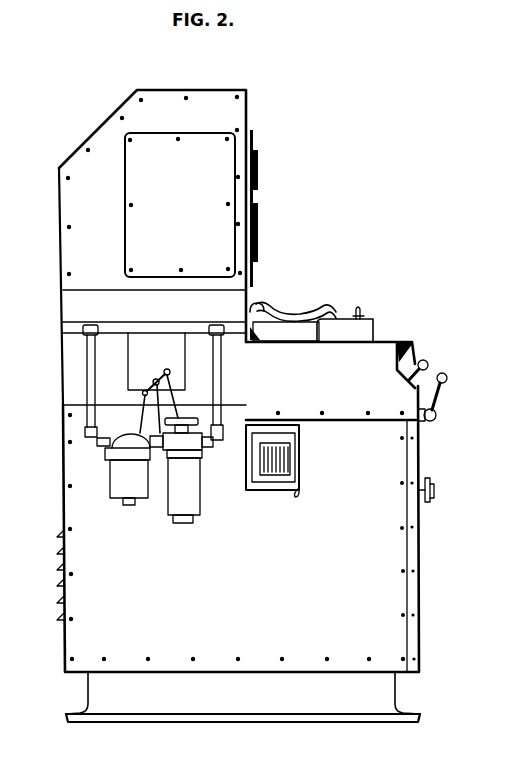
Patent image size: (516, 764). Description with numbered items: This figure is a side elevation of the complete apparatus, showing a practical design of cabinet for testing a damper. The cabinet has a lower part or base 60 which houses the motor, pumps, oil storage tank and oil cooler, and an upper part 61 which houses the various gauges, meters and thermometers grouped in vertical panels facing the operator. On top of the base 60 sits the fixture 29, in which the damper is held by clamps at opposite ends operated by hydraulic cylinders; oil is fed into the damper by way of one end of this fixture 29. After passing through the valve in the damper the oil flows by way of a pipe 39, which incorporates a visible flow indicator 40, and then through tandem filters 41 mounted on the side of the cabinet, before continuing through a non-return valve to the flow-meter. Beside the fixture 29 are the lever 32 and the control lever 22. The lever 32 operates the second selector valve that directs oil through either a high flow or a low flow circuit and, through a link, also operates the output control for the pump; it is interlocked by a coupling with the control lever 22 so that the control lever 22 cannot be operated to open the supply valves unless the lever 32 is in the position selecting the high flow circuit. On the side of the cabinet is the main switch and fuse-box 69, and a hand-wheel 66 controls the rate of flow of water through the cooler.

The upper part of the cabinet 61 is at (193, 107).
The base of the cabinet 60 is at (133, 613).
The pipe 39 is at (286, 312).
The visible flow indicator 40 is at (255, 304).
The fixture 29 is at (333, 321).
The lever 32 is at (428, 362).
The control lever 22 is at (436, 403).
The tandem filters 41 is at (176, 497).
The main switch and fuse-box 69 is at (274, 447).
The hand-wheel 66 is at (434, 496).